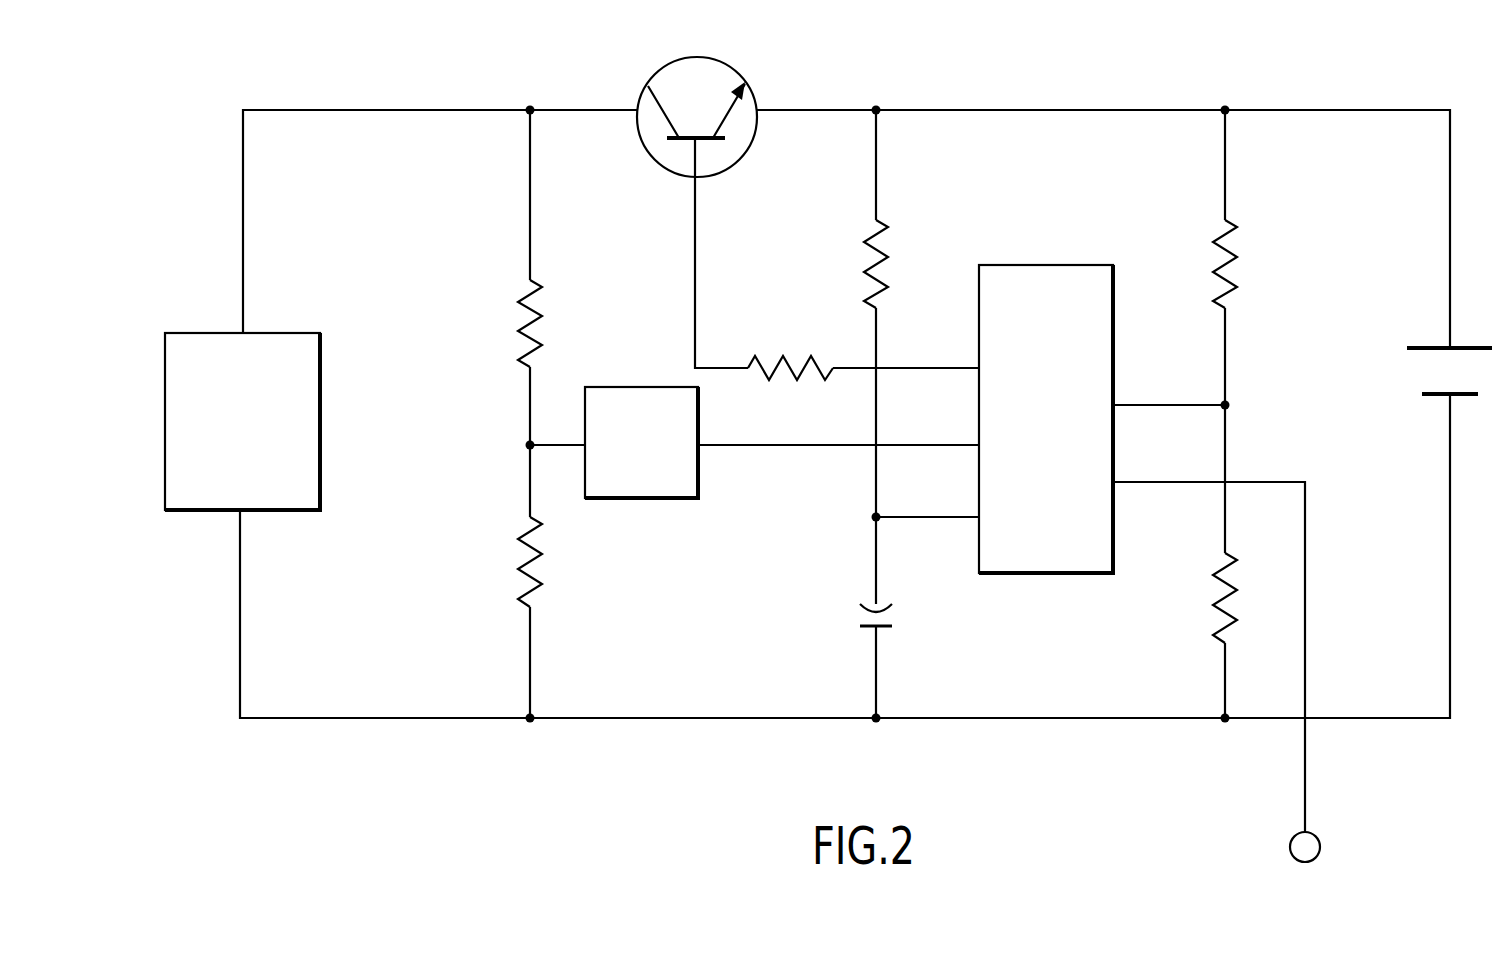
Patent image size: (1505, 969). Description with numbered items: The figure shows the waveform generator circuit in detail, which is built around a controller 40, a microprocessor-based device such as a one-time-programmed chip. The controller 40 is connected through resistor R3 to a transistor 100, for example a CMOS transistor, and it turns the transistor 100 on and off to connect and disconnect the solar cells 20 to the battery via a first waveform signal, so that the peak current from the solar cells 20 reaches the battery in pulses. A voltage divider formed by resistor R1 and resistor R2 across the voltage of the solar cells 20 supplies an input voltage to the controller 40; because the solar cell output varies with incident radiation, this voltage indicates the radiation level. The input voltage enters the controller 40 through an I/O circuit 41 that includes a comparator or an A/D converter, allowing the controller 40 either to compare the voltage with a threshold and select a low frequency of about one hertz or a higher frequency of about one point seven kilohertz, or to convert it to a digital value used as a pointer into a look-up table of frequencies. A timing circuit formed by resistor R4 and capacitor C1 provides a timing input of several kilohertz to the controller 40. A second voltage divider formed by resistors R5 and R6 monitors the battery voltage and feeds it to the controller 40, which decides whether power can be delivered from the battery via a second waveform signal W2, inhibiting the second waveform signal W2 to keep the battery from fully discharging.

The solar cells 20 is at (197, 333).
The transistor 100 is at (660, 66).
The controller 40 is at (1068, 265).
The I/O circuit 41 is at (645, 498).
The resistor R1 is at (509, 323).
The resistor R2 is at (506, 562).
The resistor R3 is at (790, 348).
The resistor R4 is at (896, 264).
The resistor R5 is at (1246, 264).
The resistor R6 is at (1204, 598).
The capacitor C1 is at (857, 618).
The second waveform signal W2 is at (1327, 737).